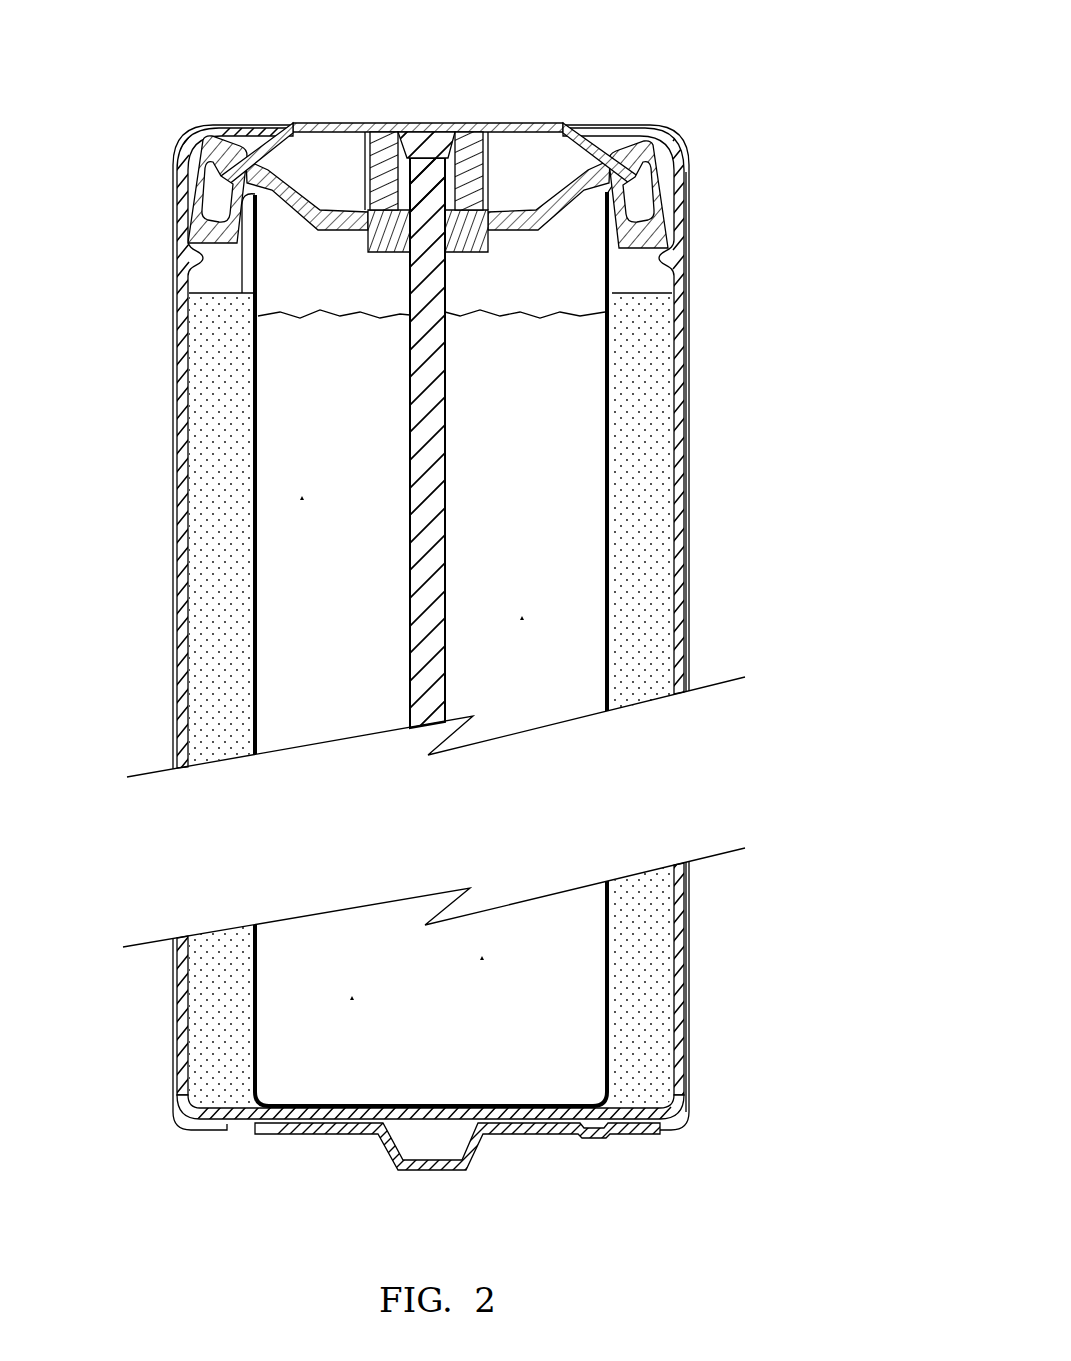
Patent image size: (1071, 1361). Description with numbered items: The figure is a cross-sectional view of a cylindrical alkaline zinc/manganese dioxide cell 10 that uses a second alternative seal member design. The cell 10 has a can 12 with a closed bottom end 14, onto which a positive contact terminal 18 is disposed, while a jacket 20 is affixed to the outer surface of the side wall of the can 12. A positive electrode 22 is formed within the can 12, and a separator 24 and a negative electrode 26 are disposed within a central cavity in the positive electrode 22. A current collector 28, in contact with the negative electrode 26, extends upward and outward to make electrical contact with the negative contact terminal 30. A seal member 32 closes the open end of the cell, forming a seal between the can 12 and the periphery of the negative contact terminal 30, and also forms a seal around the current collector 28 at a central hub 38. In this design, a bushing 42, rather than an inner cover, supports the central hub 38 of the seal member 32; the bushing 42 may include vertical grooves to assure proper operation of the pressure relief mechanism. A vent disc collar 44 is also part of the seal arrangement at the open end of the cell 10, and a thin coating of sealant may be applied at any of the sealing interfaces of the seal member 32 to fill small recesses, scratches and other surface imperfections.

The cell 10 is at (461, 620).
The can 12 is at (677, 902).
The closed bottom end 14 is at (447, 1125).
The positive contact terminal 18 is at (433, 1172).
The jacket 20 is at (690, 983).
The positive electrode 22 is at (647, 580).
The separator 24 is at (610, 533).
The negative electrode 26 is at (567, 495).
The current collector 28 is at (437, 413).
The negative contact terminal 30 is at (325, 122).
The seal member 32 is at (668, 222).
The central hub 38 is at (408, 122).
The bushing 42 is at (468, 122).
The vent disc collar 44 is at (498, 122).